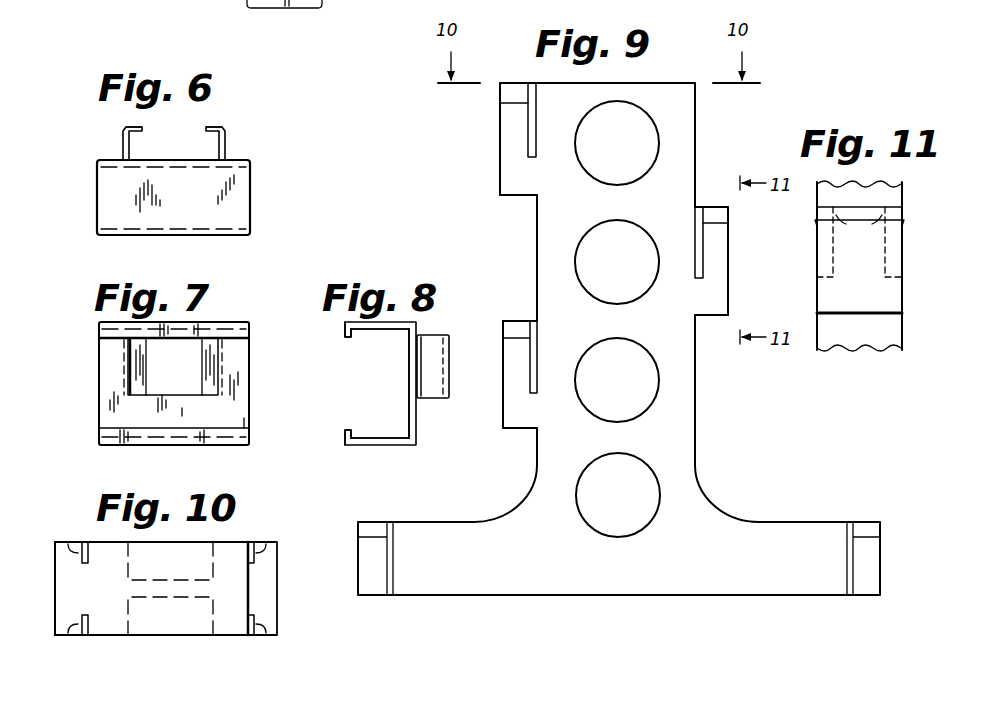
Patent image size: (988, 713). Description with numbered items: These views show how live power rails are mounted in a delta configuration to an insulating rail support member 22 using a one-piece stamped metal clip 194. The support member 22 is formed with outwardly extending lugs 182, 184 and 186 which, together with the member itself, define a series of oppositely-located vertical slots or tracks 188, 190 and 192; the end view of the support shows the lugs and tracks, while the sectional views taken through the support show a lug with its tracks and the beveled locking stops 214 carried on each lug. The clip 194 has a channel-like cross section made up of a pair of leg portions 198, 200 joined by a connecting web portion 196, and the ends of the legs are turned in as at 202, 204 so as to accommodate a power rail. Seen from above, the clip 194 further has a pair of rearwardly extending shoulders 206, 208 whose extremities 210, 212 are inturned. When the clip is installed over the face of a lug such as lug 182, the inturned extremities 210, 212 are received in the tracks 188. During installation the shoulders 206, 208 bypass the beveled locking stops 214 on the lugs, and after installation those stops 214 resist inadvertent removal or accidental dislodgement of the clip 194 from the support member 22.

In FIG. 9, the rail support member 22 is at (688, 432).
In FIG. 10, the rail support member 22 is at (182, 652).
In FIG. 11, the rail support member 22 is at (858, 352).
In FIG. 9, the lug 182 is at (503, 138).
In FIG. 10, the lug 182 is at (60, 584).
In FIG. 9, the lug 184 is at (729, 260).
In FIG. 10, the lug 184 is at (266, 598).
In FIG. 11, the lug 184 is at (907, 270).
In FIG. 9, the lug 186 is at (512, 357).
In FIG. 9, the vertical slot or track 188 is at (534, 122).
In FIG. 10, the vertical slot or track 188 is at (74, 546).
In FIG. 9, the vertical slot or track 190 is at (696, 243).
In FIG. 10, the vertical slot or track 190 is at (256, 550).
In FIG. 9, the vertical slot or track 192 is at (537, 350).
In FIG. 6, the metal clip 194 is at (254, 194).
In FIG. 7, the metal clip 194 is at (99, 385).
In FIG. 8, the metal clip 194 is at (430, 432).
In FIG. 7, the web portion 196 is at (104, 409).
In FIG. 8, the web portion 196 is at (408, 411).
In FIG. 8, the leg portion 198 is at (388, 333).
In FIG. 8, the leg portion 200 is at (381, 447).
In FIG. 7, the inturned end 202 is at (228, 330).
In FIG. 8, the inturned end 202 is at (343, 328).
In FIG. 7, the inturned end 204 is at (186, 446).
In FIG. 8, the inturned end 204 is at (344, 441).
In FIG. 6, the rearwardly extending shoulder 206 is at (121, 150).
In FIG. 7, the rearwardly extending shoulder 206 is at (128, 357).
In FIG. 6, the rearwardly extending shoulder 208 is at (226, 144).
In FIG. 7, the rearwardly extending shoulder 208 is at (222, 357).
In FIG. 8, the rearwardly extending shoulder 208 is at (435, 399).
In FIG. 6, the inturned extremity 210 is at (122, 127).
In FIG. 7, the inturned extremity 210 is at (146, 355).
In FIG. 6, the inturned extremity 212 is at (215, 127).
In FIG. 7, the inturned extremity 212 is at (206, 372).
In FIG. 9, the beveled locking stop 214 is at (512, 97).
In FIG. 11, the beveled locking stop 214 is at (859, 242).